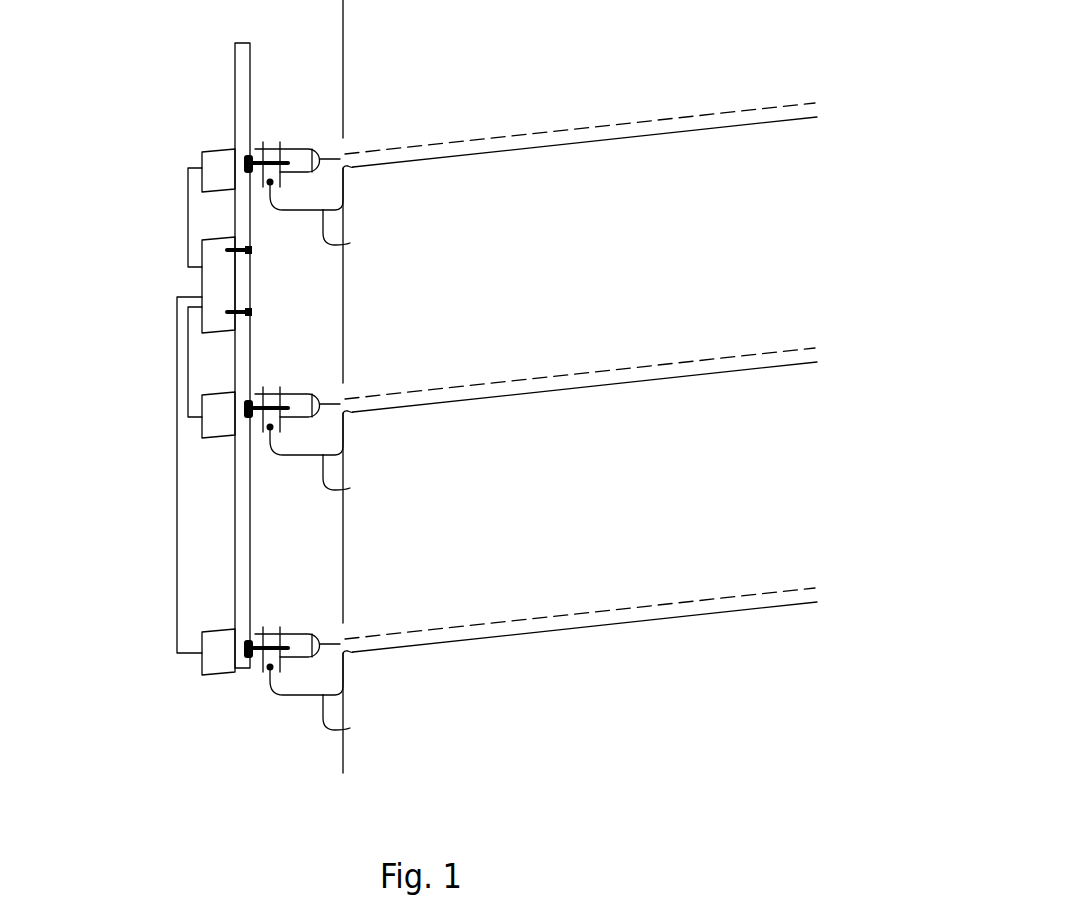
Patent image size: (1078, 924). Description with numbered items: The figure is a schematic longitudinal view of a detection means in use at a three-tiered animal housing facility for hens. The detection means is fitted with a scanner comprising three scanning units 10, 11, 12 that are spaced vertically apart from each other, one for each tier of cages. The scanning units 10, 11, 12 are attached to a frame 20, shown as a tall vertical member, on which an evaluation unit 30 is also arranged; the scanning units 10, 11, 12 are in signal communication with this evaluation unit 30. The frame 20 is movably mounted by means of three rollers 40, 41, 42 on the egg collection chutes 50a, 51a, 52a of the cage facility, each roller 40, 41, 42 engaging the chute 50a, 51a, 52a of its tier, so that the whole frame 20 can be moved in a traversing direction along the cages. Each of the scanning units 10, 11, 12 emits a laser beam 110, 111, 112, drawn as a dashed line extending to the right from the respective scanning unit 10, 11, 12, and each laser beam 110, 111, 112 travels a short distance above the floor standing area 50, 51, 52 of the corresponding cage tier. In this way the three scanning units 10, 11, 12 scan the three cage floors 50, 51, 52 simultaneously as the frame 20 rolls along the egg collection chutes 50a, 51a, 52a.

The scanning unit 10 is at (297, 657).
The scanning unit 11 is at (297, 417).
The scanning unit 12 is at (297, 172).
The frame 20 is at (242, 547).
The evaluation unit 30 is at (213, 274).
The roller 40 is at (270, 624).
The roller 41 is at (270, 384).
The roller 42 is at (270, 139).
The floor standing area 50 is at (598, 624).
The floor standing area 51 is at (598, 387).
The floor standing area 52 is at (610, 140).
The egg collection chute 50a is at (350, 728).
The egg collection chute 51a is at (350, 488).
The egg collection chute 52a is at (350, 243).
The laser beam 110 is at (708, 600).
The laser beam 111 is at (690, 362).
The laser beam 112 is at (665, 122).